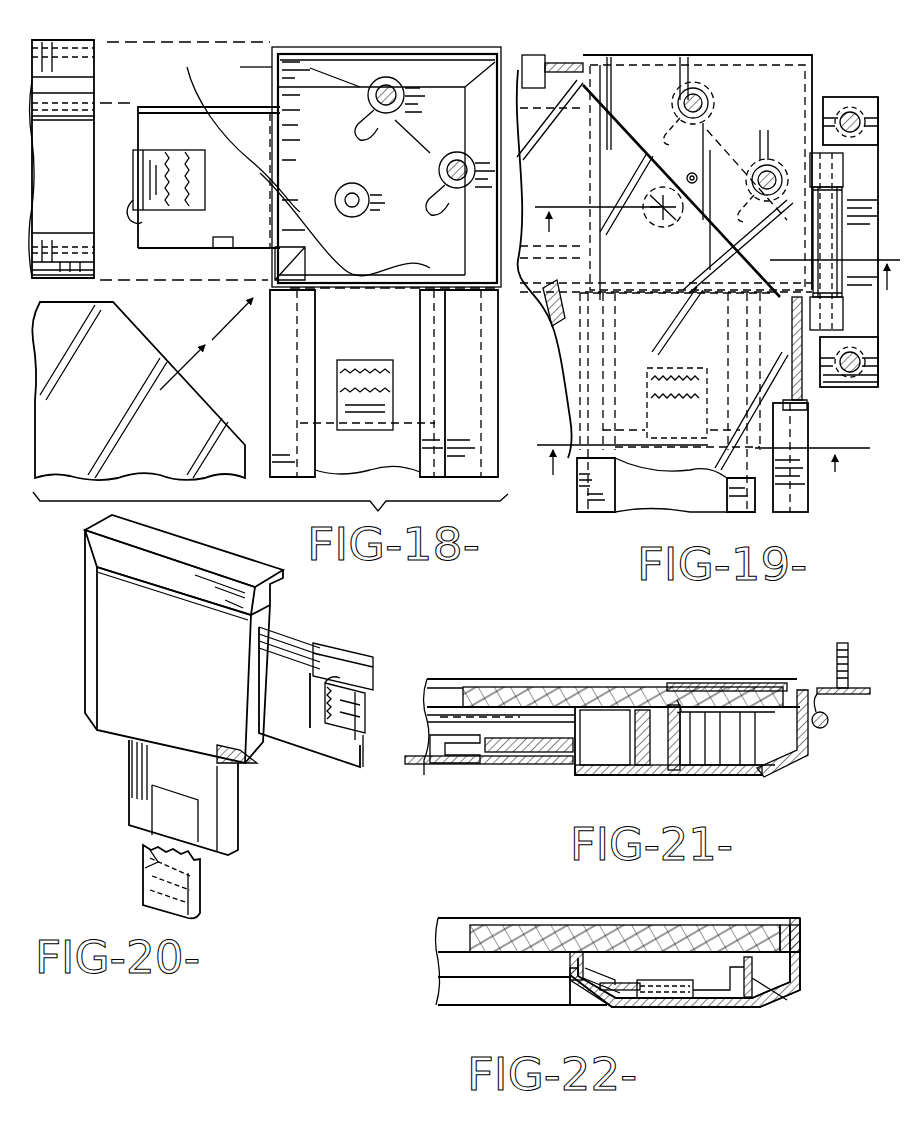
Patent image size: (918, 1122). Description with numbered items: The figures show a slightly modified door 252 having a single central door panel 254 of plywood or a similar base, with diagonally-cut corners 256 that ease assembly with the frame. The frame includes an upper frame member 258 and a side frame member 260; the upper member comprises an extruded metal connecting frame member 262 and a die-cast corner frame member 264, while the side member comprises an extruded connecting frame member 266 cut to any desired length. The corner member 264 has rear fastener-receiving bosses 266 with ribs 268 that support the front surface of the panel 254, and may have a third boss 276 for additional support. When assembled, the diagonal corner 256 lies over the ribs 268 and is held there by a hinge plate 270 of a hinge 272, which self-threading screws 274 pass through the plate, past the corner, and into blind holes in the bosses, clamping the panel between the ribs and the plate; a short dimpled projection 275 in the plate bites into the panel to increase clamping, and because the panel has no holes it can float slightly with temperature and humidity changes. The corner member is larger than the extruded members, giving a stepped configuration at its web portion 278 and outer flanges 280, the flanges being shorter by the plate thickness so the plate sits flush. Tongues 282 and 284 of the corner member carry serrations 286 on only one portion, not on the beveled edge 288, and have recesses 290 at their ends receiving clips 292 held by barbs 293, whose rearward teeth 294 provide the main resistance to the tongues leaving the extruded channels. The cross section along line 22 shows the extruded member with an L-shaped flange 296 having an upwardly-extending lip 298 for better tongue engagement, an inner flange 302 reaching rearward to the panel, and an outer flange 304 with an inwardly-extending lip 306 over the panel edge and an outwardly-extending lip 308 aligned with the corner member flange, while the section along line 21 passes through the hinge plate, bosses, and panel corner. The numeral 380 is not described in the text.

In FIG. 19, the section line 21- 21 is at (722, 235).
In FIG. 19, the section line 22- 22 is at (701, 446).
In FIG. 19, the door 252 is at (756, 38).
In FIG. 18, the central door panel 254 is at (247, 472).
In FIG. 18, the diagonally-cut corners 256 is at (417, 122).
In FIG. 21, the diagonally-cut corners 256 is at (535, 690).
In FIG. 22, the diagonally-cut corners 256 is at (438, 940).
In FIG. 18, the upper frame member 258 is at (218, 35).
In FIG. 18, the side frame member 260 is at (499, 390).
In FIG. 18, the extruded metal connecting frame member 262 is at (89, 34).
In FIG. 21, the extruded metal connecting frame member 262 is at (452, 683).
In FIG. 18, the die-cast corner frame member 264 is at (340, 46).
In FIG. 20, the die-cast corner frame member 264 is at (78, 627).
In FIG. 21, the die-cast corner frame member 264 is at (672, 780).
In FIG. 18, the extruded connecting frame member / fastener-receiving bosses 266 is at (396, 85).
In FIG. 21, the extruded connecting frame member / fastener-receiving bosses 266 is at (786, 752).
In FIG. 22, the extruded connecting frame member / fastener-receiving bosses 266 is at (730, 1012).
In FIG. 18, the ribs 268 is at (380, 118).
In FIG. 21, the ribs 268 is at (725, 745).
In FIG. 19, the hinge plate 270 is at (684, 55).
In FIG. 21, the hinge plate 270 is at (714, 683).
In FIG. 19, the hinge 272 is at (829, 82).
In FIG. 21, the hinge 272 is at (821, 748).
In FIG. 19, the self-threading screws 274 is at (706, 103).
In FIG. 21, the self-threading screws 274 is at (780, 660).
In FIG. 21, the short projection 275 is at (678, 703).
In FIG. 18, the third boss 276 is at (360, 185).
In FIG. 21, the third boss 276 is at (605, 737).
In FIG. 20, the web portion 278 is at (105, 688).
In FIG. 20, the outer flanges 280 is at (270, 565).
In FIG. 20, the tongue 282 is at (287, 630).
In FIG. 21, the tongue 282 is at (495, 755).
In FIG. 22, the tongue 282 is at (625, 995).
In FIG. 20, the tongue 284 is at (240, 823).
In FIG. 20, the serrations 286 is at (330, 645).
In FIG. 20, the beveled edge 288 is at (310, 755).
In FIG. 20, the recesses 290 is at (345, 735).
In FIG. 18, the clips 292 is at (343, 453).
In FIG. 19, the clips 292 is at (677, 403).
In FIG. 20, the clips 292 is at (368, 700).
In FIG. 21, the clips 292 is at (428, 760).
In FIG. 20, the barbs 293 is at (196, 881).
In FIG. 21, the barbs 293 is at (500, 760).
In FIG. 20, the teeth 294 is at (143, 845).
In FIG. 22, the L-shaped flange 296 is at (765, 990).
In FIG. 22, the upwardly-extending lip 298 is at (720, 963).
In FIG. 22, the inner flange 302 is at (570, 965).
In FIG. 22, the outer flange 304 is at (800, 962).
In FIG. 22, the inwardly-extending lip 306 is at (780, 925).
In FIG. 22, the outwardly-extending lip 308 is at (805, 910).
In FIG. 22, the lip 380 is at (615, 985).